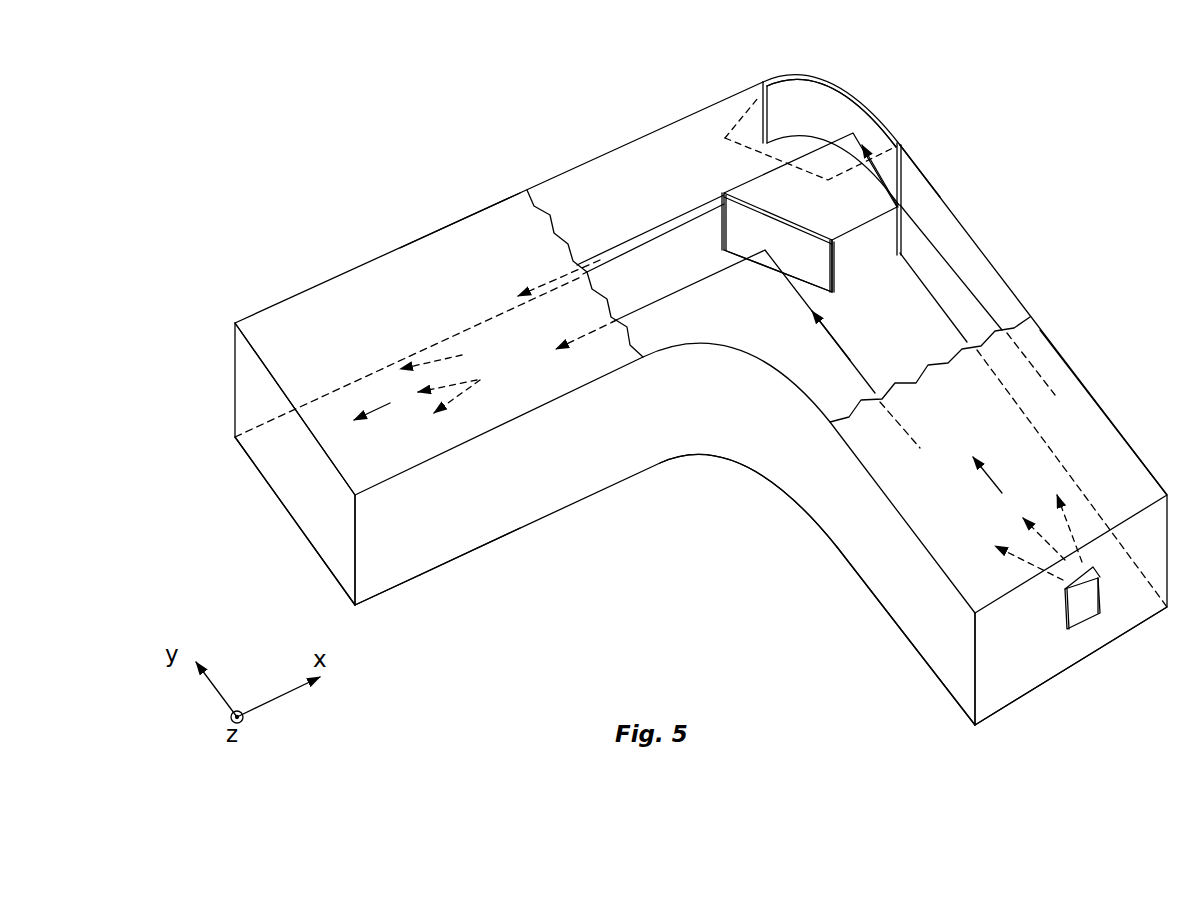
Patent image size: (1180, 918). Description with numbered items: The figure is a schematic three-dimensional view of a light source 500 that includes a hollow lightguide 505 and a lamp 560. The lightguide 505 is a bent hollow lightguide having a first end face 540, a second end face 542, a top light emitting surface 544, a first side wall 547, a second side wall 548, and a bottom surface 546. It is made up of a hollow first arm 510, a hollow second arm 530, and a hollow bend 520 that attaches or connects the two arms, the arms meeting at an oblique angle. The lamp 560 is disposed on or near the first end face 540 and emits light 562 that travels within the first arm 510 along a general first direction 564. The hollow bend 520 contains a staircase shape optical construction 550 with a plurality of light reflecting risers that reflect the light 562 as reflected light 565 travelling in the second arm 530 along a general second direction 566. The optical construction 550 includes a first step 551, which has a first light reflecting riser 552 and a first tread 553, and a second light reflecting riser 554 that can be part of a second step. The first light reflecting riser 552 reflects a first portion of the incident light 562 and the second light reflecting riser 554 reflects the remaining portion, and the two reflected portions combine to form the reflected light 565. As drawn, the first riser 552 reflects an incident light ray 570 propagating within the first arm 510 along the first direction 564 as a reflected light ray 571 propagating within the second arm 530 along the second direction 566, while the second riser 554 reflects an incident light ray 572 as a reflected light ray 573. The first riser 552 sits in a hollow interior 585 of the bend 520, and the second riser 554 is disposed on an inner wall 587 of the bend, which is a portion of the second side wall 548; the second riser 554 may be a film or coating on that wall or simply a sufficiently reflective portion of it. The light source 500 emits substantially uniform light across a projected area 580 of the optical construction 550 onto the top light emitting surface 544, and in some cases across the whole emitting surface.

The light source 500 is at (1034, 95).
The hollow lightguide 505 is at (292, 308).
The first arm 510 is at (850, 540).
The hollow bend 520 is at (833, 77).
The second arm 530 is at (403, 565).
The first end face 540 is at (998, 693).
The second end face 542 is at (332, 552).
The top light emitting surface 544 is at (1077, 403).
The bottom surface 546 is at (273, 467).
The first side wall 547 is at (472, 533).
The second side wall 548 is at (435, 248).
The staircase shape optical construction 550 is at (880, 215).
The first step 551 is at (870, 238).
The first light reflecting riser 552 is at (855, 268).
The first tread 553 is at (742, 178).
The second light reflecting riser 554 is at (752, 95).
The lamp 560 is at (1085, 610).
The light 562 is at (1013, 558).
The first direction 564 is at (990, 478).
The reflected light 565 is at (440, 360).
The second direction 566 is at (382, 407).
The incident light ray 570 is at (830, 338).
The reflected light ray 571 is at (675, 293).
The incident light ray 572 is at (993, 310).
The reflected light ray 573 is at (657, 223).
The projected area 580 is at (875, 137).
The hollow interior 585 is at (767, 337).
The inner wall 587 is at (913, 178).